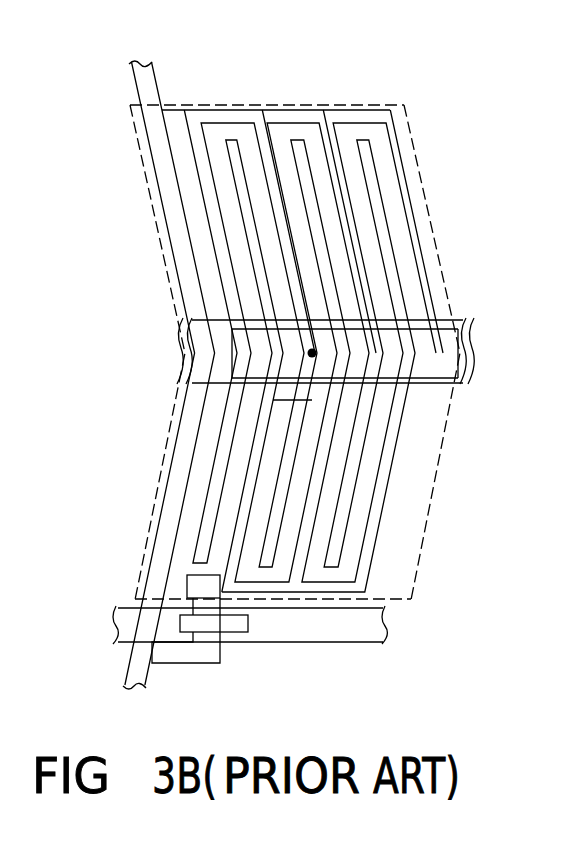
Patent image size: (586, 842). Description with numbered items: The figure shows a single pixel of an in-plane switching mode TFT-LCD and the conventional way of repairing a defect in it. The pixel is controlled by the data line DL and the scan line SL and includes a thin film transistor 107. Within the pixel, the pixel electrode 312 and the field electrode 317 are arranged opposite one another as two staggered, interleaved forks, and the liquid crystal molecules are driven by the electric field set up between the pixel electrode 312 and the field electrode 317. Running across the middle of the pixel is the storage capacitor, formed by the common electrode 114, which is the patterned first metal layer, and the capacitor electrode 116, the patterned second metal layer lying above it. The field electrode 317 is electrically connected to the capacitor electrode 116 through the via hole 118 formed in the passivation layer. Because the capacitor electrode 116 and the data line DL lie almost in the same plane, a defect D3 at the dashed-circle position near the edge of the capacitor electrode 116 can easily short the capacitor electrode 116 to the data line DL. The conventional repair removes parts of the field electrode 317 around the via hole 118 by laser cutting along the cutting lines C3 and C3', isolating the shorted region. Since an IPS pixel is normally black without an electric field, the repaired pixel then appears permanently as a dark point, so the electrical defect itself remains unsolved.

The data line DL is at (137, 62).
The field electrode 317 is at (391, 133).
The pixel electrode 312 is at (368, 193).
The cutting line C3' is at (409, 288).
The via hole 118 is at (320, 321).
The capacitor electrode 116 is at (452, 349).
The common electrode 114 is at (460, 386).
The defect D3 is at (190, 367).
The cutting line C3 is at (386, 425).
The scan line SL is at (118, 624).
The thin film transistor 107 is at (220, 624).